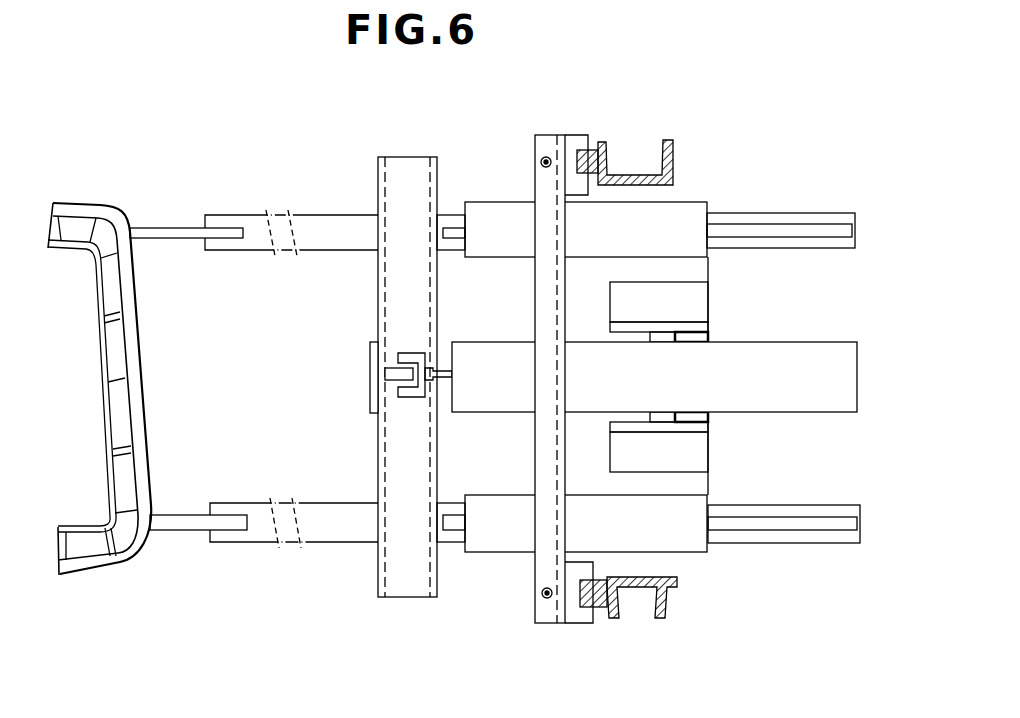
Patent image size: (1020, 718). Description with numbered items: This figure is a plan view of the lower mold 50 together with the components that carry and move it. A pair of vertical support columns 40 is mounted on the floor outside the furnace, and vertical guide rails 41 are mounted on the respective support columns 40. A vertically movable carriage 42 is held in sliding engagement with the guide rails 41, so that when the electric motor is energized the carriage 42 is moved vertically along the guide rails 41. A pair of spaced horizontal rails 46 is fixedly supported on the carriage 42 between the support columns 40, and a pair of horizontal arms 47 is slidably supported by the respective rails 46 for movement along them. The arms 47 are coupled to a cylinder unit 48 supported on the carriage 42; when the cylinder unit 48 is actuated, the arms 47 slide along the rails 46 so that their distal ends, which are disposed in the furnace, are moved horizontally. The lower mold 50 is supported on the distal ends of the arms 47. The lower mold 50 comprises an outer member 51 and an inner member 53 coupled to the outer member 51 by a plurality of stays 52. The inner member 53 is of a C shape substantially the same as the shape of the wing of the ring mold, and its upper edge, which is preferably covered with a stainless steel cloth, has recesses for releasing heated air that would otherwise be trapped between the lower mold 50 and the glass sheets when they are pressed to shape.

The vertical support column 40 is at (643, 176).
The vertical guide rail 41 is at (579, 160).
The vertically movable carriage 42 is at (540, 220).
The horizontal rail 46 is at (688, 218).
The horizontal arm 47 is at (318, 226).
The cylinder unit 48 is at (790, 352).
The lower mold 50 is at (121, 389).
The outer member 51 is at (132, 330).
The stay 52 is at (93, 283).
The inner member 53 is at (100, 368).